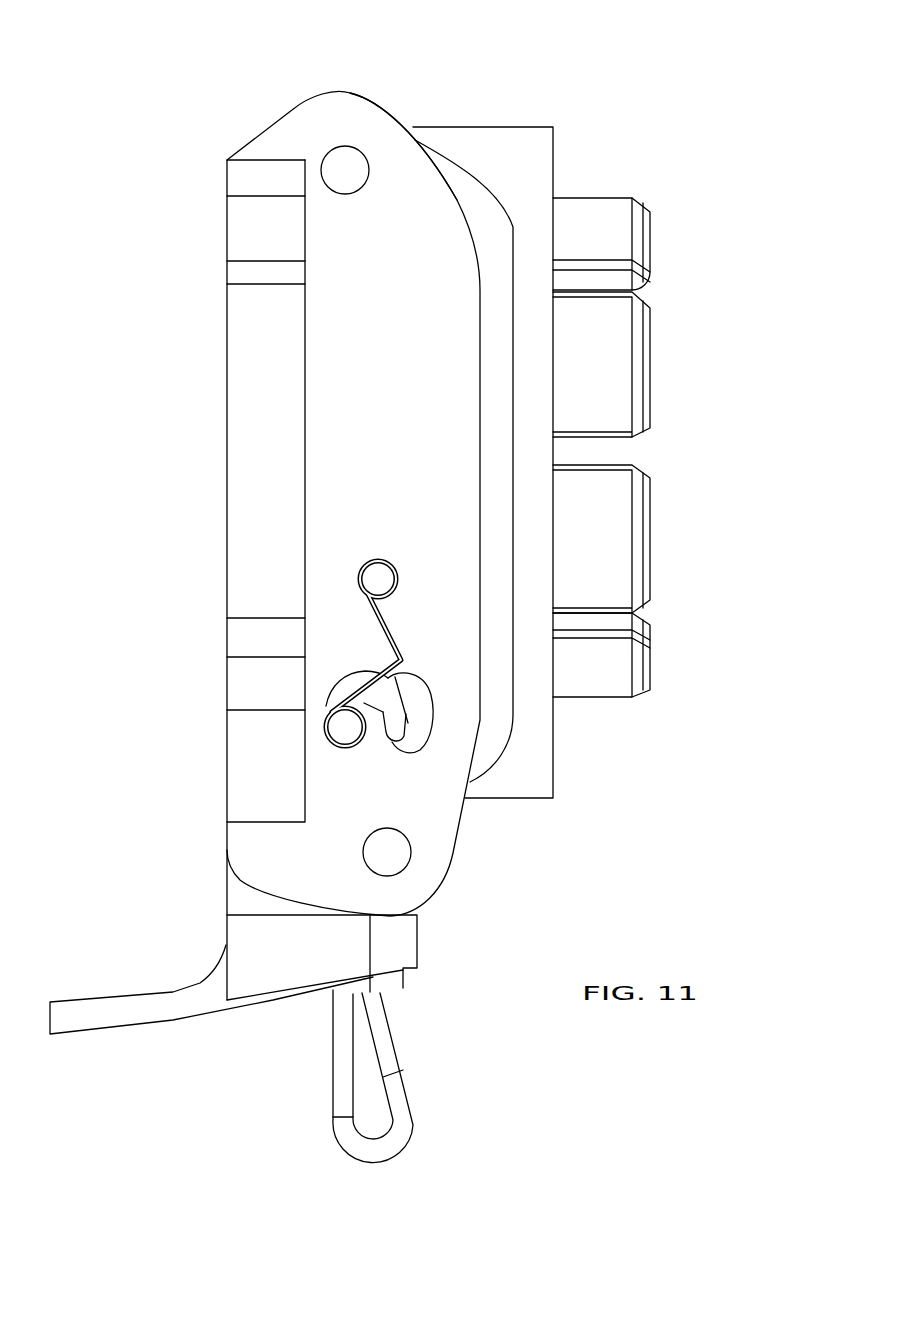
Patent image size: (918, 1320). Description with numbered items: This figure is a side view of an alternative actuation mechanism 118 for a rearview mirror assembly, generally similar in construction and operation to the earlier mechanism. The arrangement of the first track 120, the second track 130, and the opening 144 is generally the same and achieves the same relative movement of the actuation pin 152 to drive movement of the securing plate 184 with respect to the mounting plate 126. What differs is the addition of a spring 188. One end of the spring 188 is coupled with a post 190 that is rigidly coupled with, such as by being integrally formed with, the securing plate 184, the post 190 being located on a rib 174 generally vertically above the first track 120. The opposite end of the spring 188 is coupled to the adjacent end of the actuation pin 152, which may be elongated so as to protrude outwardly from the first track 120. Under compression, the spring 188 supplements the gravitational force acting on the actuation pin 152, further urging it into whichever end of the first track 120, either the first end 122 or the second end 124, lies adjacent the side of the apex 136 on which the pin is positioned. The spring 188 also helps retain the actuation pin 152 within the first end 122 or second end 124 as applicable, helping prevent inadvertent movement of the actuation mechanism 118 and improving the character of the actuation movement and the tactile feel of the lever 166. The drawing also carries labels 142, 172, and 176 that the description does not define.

The actuation mechanism 118 is at (487, 66).
The first track 120 is at (407, 685).
The first end 122 is at (344, 756).
The second end 124 is at (420, 743).
The mounting plate 126 is at (485, 199).
The second track 130 is at (363, 703).
The apex 136 is at (382, 713).
The stop surface 142 is at (387, 713).
The opening 144 is at (340, 692).
The actuation pin 152 is at (340, 727).
The lever 166 is at (377, 1107).
The upper mounting hole 172 is at (337, 167).
The rib 174 is at (392, 187).
The lower mounting hole 176 is at (399, 850).
The securing plate 184 is at (240, 505).
The spring 188 is at (388, 623).
The post 190 is at (377, 577).